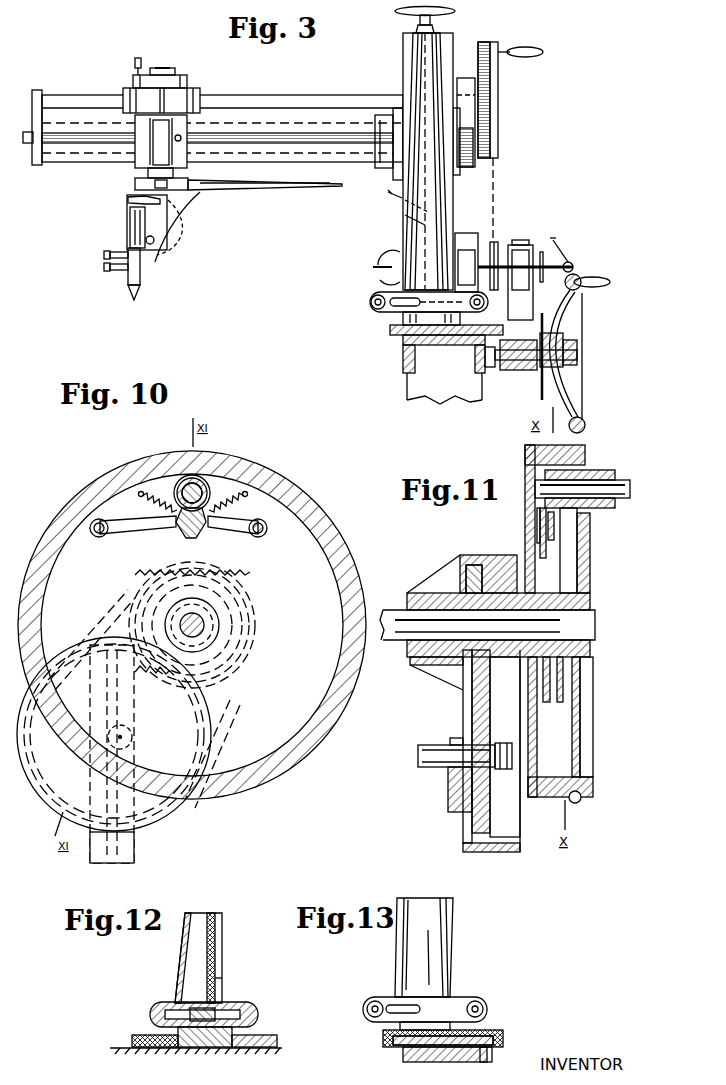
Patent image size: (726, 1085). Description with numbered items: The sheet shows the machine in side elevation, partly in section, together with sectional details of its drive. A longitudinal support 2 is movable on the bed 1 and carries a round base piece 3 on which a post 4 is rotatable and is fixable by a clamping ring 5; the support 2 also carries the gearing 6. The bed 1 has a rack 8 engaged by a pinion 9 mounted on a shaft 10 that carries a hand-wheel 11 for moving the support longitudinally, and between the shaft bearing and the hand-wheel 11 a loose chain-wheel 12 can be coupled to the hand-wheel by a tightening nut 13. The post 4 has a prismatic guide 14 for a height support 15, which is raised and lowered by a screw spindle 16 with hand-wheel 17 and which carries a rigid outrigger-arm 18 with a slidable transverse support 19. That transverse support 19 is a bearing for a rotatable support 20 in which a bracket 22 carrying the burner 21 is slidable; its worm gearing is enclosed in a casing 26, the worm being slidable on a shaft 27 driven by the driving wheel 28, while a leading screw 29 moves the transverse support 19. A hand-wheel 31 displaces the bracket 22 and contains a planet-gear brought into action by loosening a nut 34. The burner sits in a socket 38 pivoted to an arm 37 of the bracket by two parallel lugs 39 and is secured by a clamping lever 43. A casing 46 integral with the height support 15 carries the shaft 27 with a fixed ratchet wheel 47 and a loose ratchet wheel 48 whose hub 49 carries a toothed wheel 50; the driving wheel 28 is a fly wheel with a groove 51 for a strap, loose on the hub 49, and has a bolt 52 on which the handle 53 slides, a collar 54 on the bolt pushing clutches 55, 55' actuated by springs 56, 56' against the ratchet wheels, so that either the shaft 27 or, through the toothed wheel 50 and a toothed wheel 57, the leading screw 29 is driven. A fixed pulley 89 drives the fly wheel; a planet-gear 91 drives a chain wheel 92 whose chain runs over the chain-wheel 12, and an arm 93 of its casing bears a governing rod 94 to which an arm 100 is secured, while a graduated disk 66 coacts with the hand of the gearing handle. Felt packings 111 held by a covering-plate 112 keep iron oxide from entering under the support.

In FIG. 3, the bed 1 is at (405, 360).
In FIG. 13, the bed 1 is at (408, 1050).
In FIG. 3, the longitudinal support 2 is at (392, 332).
In FIG. 12, the longitudinal support 2 is at (260, 1036).
In FIG. 12, the round base piece 3 is at (215, 1048).
In FIG. 3, the post 4 is at (445, 190).
In FIG. 12, the post 4 is at (200, 920).
In FIG. 13, the post 4 is at (407, 936).
In FIG. 3, the clamping ring 5 is at (429, 308).
In FIG. 12, the clamping ring 5 is at (255, 1010).
In FIG. 13, the clamping ring 5 is at (455, 1002).
In FIG. 3, the gearing 6 is at (462, 236).
In FIG. 3, the rack 8 is at (484, 352).
In FIG. 13, the rack 8 is at (492, 1054).
In FIG. 3, the pinion 9 is at (490, 368).
In FIG. 3, the shaft 10 is at (516, 370).
In FIG. 3, the hand-wheel 11 is at (582, 395).
In FIG. 3, the chain-wheel 12 is at (540, 398).
In FIG. 3, the tightening nut 13 is at (578, 340).
In FIG. 3, the prismatic guide 14 is at (450, 40).
In FIG. 3, the height support 15 is at (396, 170).
In FIG. 10, the height support 15 is at (108, 863).
In FIG. 11, the height support 15 is at (460, 740).
In FIG. 3, the screw spindle 16 is at (420, 60).
In FIG. 12, the screw spindle 16 is at (216, 948).
In FIG. 3, the hand-wheel 17 is at (456, 12).
In FIG. 3, the outrigger-arm 18 is at (320, 118).
In FIG. 3, the transverse support 19 is at (142, 155).
In FIG. 3, the rotatable support 20 is at (190, 188).
In FIG. 3, the burner 21 is at (128, 272).
In FIG. 3, the bracket 22 is at (305, 187).
In FIG. 3, the casing 26 is at (200, 95).
In FIG. 3, the shaft 27 is at (270, 105).
In FIG. 10, the shaft 27 is at (195, 640).
In FIG. 11, the shaft 27 is at (396, 612).
In FIG. 3, the driving wheel 28 is at (495, 85).
In FIG. 10, the driving wheel 28 is at (68, 512).
In FIG. 11, the driving wheel 28 is at (548, 797).
In FIG. 3, the leading screw 29 is at (72, 145).
In FIG. 10, the leading screw 29 is at (126, 740).
In FIG. 11, the leading screw 29 is at (433, 767).
In FIG. 3, the hand-wheel 31 is at (187, 83).
In FIG. 3, the nut 34 is at (176, 70).
In FIG. 3, the arm 37 is at (170, 252).
In FIG. 3, the socket 38 is at (128, 226).
In FIG. 3, the lugs 39 is at (150, 245).
In FIG. 3, the clamping lever 43 is at (185, 225).
In FIG. 3, the casing 46 is at (462, 78).
In FIG. 10, the casing 46 is at (38, 778).
In FIG. 11, the casing 46 is at (490, 852).
In FIG. 10, the fixed ratchet wheel 47 is at (262, 660).
In FIG. 11, the fixed ratchet wheel 47 is at (562, 672).
In FIG. 11, the loose ratchet wheel 48 is at (547, 702).
In FIG. 11, the hub 49 is at (505, 747).
In FIG. 11, the toothed wheel 50 is at (465, 675).
In FIG. 11, the groove 51 is at (582, 798).
In FIG. 10, the bolt 52 is at (203, 480).
In FIG. 11, the bolt 52 is at (612, 498).
In FIG. 3, the handle 53 is at (528, 50).
In FIG. 10, the handle 53 is at (186, 477).
In FIG. 11, the handle 53 is at (600, 472).
In FIG. 10, the collar 54 is at (191, 523).
In FIG. 11, the collar 54 is at (580, 520).
In FIG. 10, the clutch 55 is at (133, 539).
In FIG. 11, the clutch 55 is at (577, 533).
In FIG. 10, the clutch 55' is at (237, 535).
In FIG. 11, the clutch 55' is at (519, 522).
In FIG. 10, the spring 56 is at (153, 504).
In FIG. 10, the spring 56' is at (238, 502).
In FIG. 10, the toothed wheel 57 is at (158, 820).
In FIG. 11, the toothed wheel 57 is at (472, 826).
In FIG. 3, the graduated disk 66 is at (390, 196).
In FIG. 3, the fixed pulley 89 is at (496, 242).
In FIG. 3, the planet-gear 91 is at (532, 246).
In FIG. 3, the chain wheel 92 is at (543, 278).
In FIG. 3, the arm 93 is at (598, 278).
In FIG. 3, the governing rod 94 is at (573, 266).
In FIG. 3, the arm 100 is at (556, 242).
In FIG. 12, the felt packings 111 is at (133, 1041).
In FIG. 13, the felt packings 111 is at (503, 1036).
In FIG. 12, the covering-plate 112 is at (140, 1036).
In FIG. 13, the covering-plate 112 is at (383, 1038).